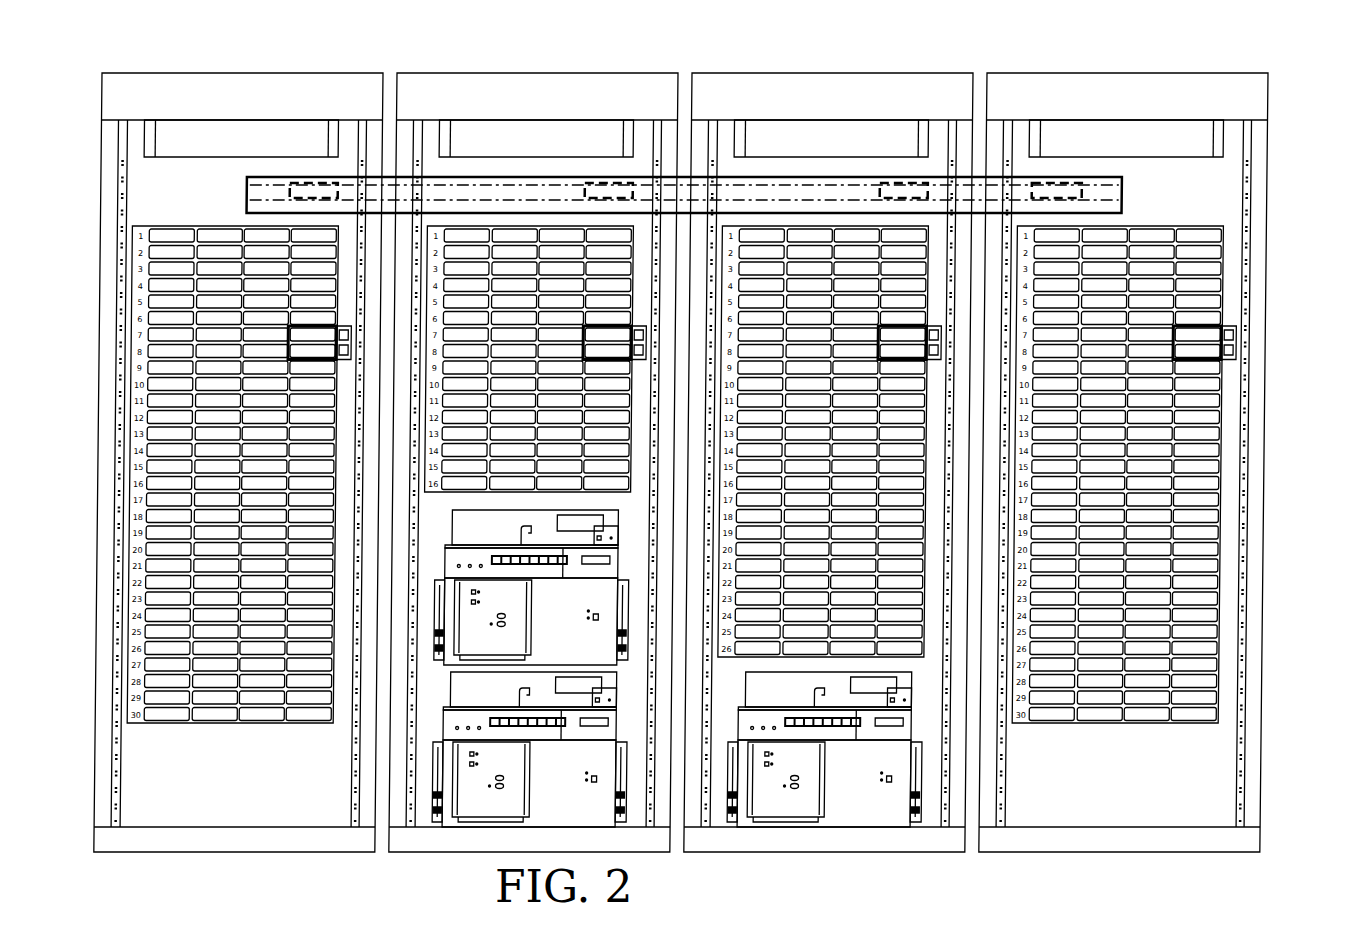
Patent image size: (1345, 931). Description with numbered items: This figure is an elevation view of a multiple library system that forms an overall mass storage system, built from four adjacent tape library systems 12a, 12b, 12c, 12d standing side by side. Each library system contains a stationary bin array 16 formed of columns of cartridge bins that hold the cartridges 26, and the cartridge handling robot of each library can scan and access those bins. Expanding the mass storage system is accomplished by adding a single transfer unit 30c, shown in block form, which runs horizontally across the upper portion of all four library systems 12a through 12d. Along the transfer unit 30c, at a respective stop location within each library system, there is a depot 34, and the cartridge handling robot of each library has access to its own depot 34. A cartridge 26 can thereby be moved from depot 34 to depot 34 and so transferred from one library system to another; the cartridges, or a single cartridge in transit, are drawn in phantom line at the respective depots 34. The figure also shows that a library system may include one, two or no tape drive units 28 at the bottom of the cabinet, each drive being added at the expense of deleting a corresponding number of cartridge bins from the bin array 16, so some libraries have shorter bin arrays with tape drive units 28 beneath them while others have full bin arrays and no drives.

The library system 12a is at (1162, 61).
The library system 12b is at (889, 61).
The library system 12c is at (572, 63).
The library system 12d is at (297, 61).
The stationary bin array 16 is at (183, 736).
The cartridge 26 is at (299, 190).
The tape drive unit 28 is at (461, 724).
The transfer unit 30c is at (255, 161).
The depot 34 is at (318, 163).